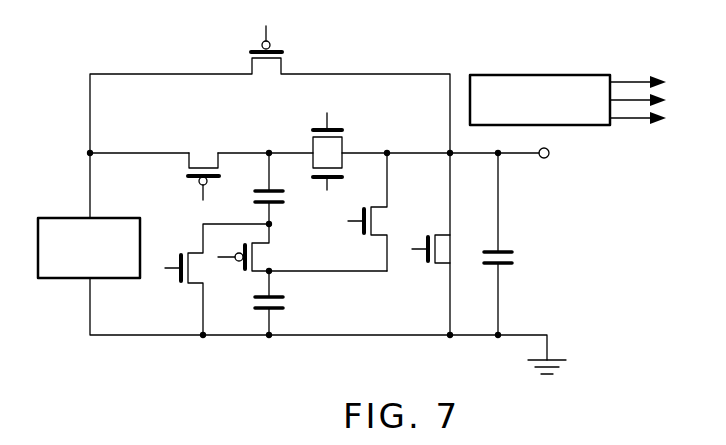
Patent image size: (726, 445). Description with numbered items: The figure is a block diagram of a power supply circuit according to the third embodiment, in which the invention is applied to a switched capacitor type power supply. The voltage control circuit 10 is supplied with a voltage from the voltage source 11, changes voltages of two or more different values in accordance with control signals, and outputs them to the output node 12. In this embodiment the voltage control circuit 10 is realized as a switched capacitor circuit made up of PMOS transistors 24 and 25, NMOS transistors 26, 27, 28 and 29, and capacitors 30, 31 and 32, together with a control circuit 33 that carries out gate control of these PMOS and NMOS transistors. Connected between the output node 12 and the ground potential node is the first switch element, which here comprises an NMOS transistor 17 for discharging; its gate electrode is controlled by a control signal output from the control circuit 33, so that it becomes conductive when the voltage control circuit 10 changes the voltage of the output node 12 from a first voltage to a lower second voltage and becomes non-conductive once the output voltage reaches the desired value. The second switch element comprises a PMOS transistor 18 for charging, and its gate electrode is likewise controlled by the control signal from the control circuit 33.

The voltage control circuit 10 is at (263, 341).
The voltage source 11 is at (58, 216).
The output node 12 is at (550, 153).
The NMOS transistor 17 is at (450, 243).
The PMOS transistor 18 is at (287, 55).
The PMOS transistor 24 is at (203, 150).
The PMOS transistor 25 is at (270, 253).
The NMOS transistor 26 is at (347, 142).
The NMOS transistor 27 is at (204, 268).
The NMOS transistor 28 is at (347, 162).
The NMOS transistor 29 is at (387, 218).
The capacitor 30 is at (290, 198).
The capacitor 31 is at (288, 303).
The capacitor 32 is at (518, 258).
The control circuit 33 is at (507, 75).